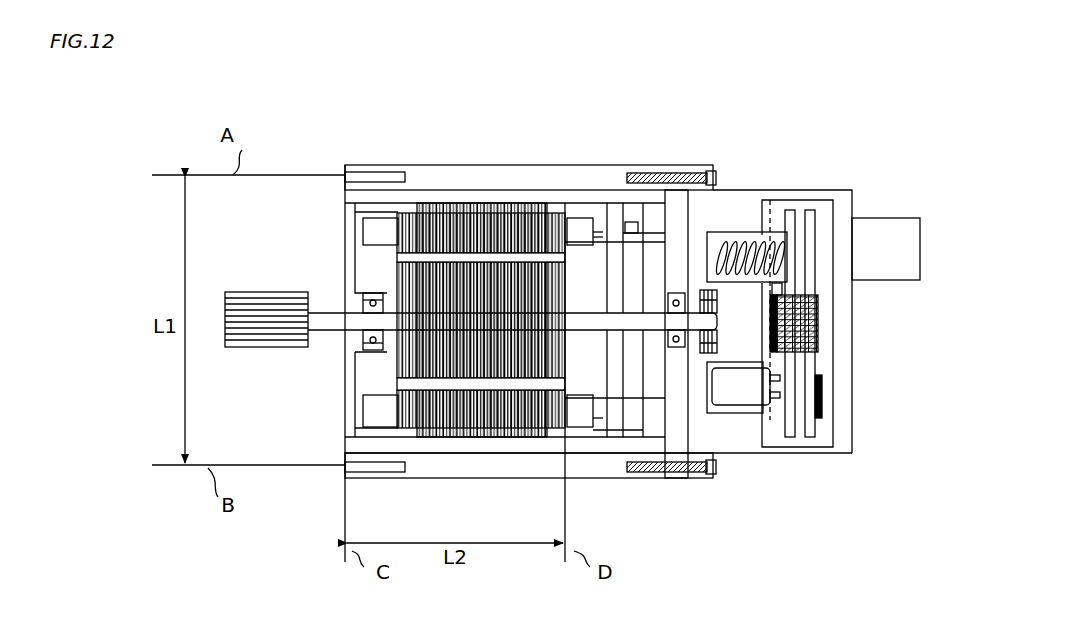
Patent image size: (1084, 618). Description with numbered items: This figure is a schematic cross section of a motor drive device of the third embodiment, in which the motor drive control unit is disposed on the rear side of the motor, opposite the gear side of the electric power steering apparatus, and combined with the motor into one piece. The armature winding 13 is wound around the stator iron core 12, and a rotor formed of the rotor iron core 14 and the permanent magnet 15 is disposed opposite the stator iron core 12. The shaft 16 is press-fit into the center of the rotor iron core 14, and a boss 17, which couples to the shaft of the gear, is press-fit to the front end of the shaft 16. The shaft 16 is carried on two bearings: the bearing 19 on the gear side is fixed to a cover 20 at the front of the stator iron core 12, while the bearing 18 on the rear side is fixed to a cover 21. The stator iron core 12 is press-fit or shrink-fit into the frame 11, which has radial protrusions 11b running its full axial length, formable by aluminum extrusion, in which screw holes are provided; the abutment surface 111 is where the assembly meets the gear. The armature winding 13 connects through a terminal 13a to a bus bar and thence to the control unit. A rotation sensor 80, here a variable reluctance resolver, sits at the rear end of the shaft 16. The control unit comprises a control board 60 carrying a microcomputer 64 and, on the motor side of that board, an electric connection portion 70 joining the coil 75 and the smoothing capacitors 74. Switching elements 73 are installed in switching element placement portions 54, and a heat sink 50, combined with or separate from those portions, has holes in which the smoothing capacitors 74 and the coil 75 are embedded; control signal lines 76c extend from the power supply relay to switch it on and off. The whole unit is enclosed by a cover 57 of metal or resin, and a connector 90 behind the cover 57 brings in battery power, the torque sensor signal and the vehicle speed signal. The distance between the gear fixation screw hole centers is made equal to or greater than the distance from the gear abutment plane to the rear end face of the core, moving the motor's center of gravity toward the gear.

The frame 11 is at (503, 440).
The protrusions 11b is at (520, 177).
The abutment surface 111 is at (345, 169).
The stator iron core 12 is at (440, 203).
The armature winding 13 is at (367, 410).
The terminal 13a is at (617, 208).
The rotor iron core 14 is at (410, 365).
The permanent magnet 15 is at (400, 258).
The shaft 16 is at (330, 313).
The boss 17 is at (245, 343).
The bearing 18 is at (678, 345).
The bearing 19 is at (365, 293).
The cover 20 is at (352, 377).
The cover 21 is at (675, 198).
The heat sink 50 is at (732, 197).
The switching element placement portions 54 is at (765, 350).
The cover 57 is at (840, 198).
The control board 60 is at (807, 432).
The microcomputer 64 is at (822, 392).
The electric connection portion 70 is at (788, 433).
The switching elements 73 is at (780, 292).
The smoothing capacitors 74 is at (737, 398).
The coil 75 is at (748, 240).
The control signal lines 76c is at (803, 323).
The rotation sensor 80 is at (700, 340).
The connector 90 is at (893, 222).